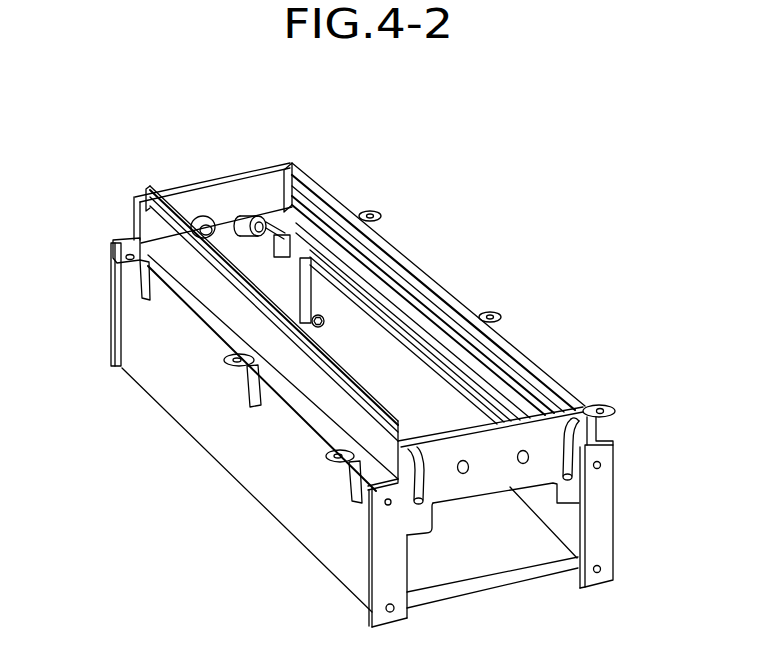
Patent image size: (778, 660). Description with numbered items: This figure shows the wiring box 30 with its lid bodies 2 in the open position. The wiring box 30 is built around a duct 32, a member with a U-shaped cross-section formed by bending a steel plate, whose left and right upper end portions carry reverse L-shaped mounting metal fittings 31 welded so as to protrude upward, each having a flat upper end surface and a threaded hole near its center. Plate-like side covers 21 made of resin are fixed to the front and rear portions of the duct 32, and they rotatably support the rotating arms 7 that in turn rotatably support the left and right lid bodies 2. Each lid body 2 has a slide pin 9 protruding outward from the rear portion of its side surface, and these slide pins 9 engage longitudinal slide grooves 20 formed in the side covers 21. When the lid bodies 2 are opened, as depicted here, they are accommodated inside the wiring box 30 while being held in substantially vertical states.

The wiring box 30 is at (367, 373).
The lid body 2 is at (400, 250).
The rotating arm 7 is at (200, 225).
The mounting metal fitting 31 is at (113, 240).
The duct 32 is at (212, 422).
The slide groove 20 is at (385, 503).
The slide pin 9 is at (420, 508).
The side cover 21 is at (600, 545).